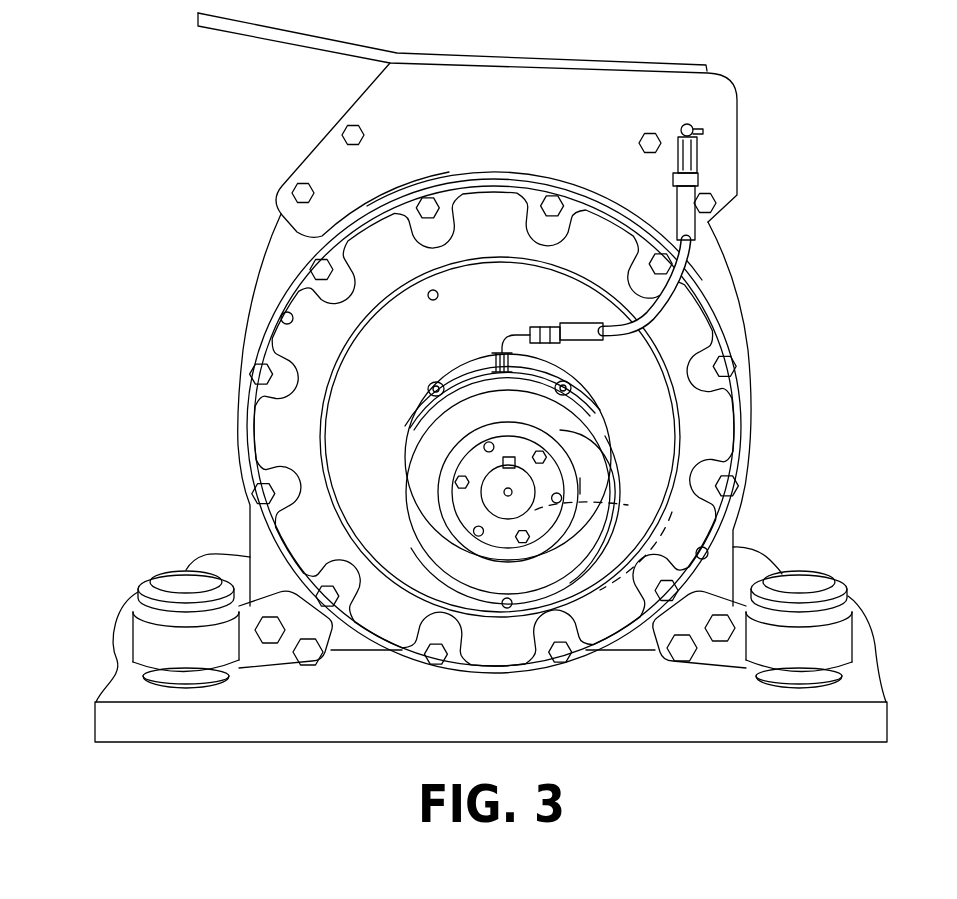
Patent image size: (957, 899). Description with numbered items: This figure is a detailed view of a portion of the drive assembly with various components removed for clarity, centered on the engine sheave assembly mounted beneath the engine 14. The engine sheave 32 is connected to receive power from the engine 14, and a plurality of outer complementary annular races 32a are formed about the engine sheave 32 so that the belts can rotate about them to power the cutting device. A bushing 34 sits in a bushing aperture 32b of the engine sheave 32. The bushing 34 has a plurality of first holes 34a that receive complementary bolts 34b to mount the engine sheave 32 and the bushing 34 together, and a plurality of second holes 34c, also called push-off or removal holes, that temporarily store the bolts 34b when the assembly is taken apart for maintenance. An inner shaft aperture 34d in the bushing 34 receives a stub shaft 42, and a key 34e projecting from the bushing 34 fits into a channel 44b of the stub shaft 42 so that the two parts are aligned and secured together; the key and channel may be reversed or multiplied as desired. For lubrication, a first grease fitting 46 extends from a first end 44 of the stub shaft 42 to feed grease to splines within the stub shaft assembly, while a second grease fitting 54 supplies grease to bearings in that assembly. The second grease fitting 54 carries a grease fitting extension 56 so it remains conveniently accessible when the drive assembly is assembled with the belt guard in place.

The engine 14 is at (540, 108).
The grease fitting extension 56 is at (687, 158).
The second grease fitting 54 is at (470, 342).
The engine sheave 32 is at (530, 424).
The outer complementary annular races 32a is at (472, 383).
The bushing aperture 32b is at (432, 414).
The bushing 34 is at (480, 440).
The first holes 34a is at (607, 505).
The bolts 34b is at (580, 546).
The second holes 34c is at (585, 462).
The inner shaft aperture 34d is at (490, 466).
The key 34e is at (571, 389).
The first end 44 is at (483, 488).
The channel 44b is at (562, 432).
The stub shaft 42 is at (480, 512).
The first grease fitting 46 is at (506, 500).